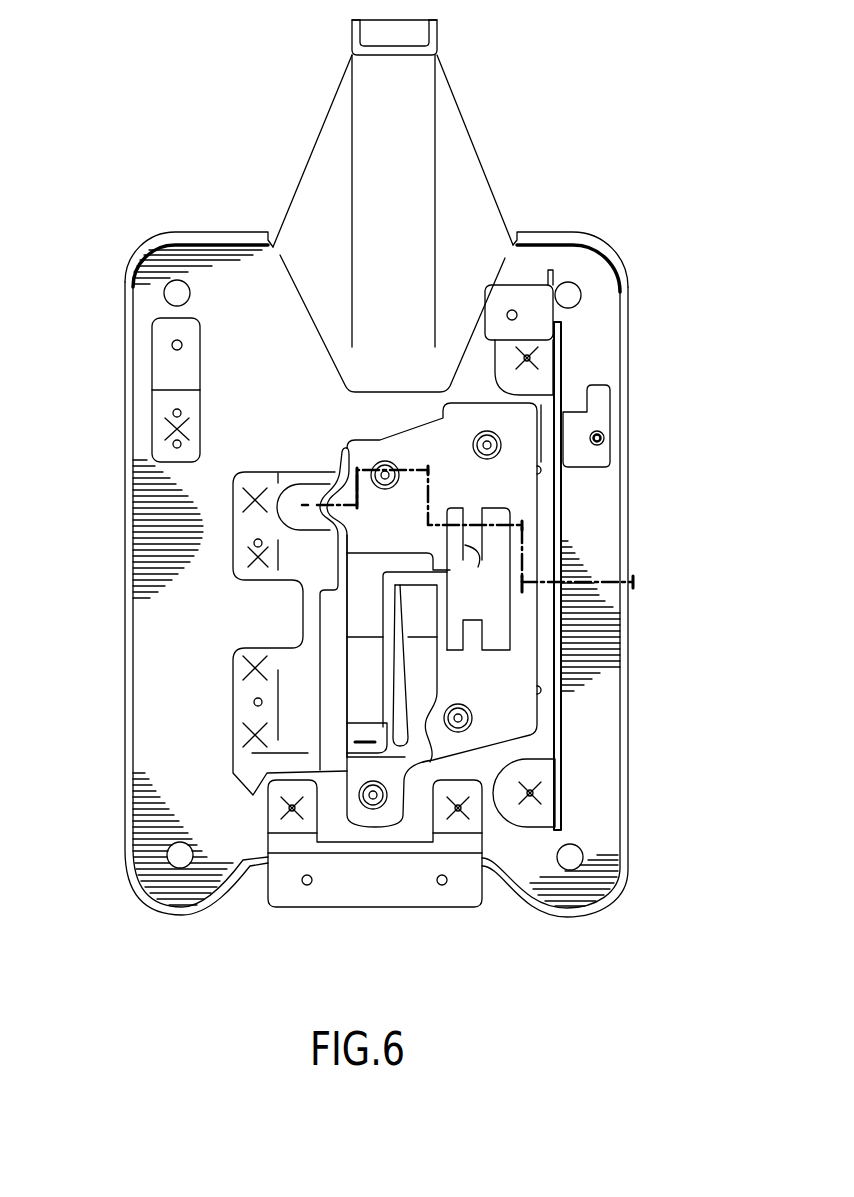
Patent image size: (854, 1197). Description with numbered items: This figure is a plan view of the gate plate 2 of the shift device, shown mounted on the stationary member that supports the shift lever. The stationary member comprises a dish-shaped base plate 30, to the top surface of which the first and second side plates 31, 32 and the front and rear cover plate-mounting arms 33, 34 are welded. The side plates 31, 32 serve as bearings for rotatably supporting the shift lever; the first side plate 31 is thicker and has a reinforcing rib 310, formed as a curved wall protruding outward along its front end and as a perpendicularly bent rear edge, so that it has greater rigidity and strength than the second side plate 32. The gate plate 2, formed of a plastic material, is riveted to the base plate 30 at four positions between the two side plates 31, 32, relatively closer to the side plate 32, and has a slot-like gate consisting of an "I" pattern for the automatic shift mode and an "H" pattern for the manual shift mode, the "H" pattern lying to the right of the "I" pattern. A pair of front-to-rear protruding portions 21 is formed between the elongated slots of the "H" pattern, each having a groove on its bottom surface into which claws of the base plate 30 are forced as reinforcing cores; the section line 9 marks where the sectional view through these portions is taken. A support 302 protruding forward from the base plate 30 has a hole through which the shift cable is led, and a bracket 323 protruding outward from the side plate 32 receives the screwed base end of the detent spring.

The gate plate 2 is at (517, 717).
The sectional view line 9 is at (118, 503).
The protruding portions 21 is at (473, 623).
The base plate 30 is at (157, 763).
The first side plate 31 is at (291, 599).
The second side plate 32 is at (563, 535).
The front cover plate-mounting arm 33 is at (150, 338).
The rear cover plate-mounting arm 34 is at (470, 897).
The support 302 is at (440, 30).
The reinforcing rib 310 is at (327, 495).
The bracket 323 is at (600, 413).